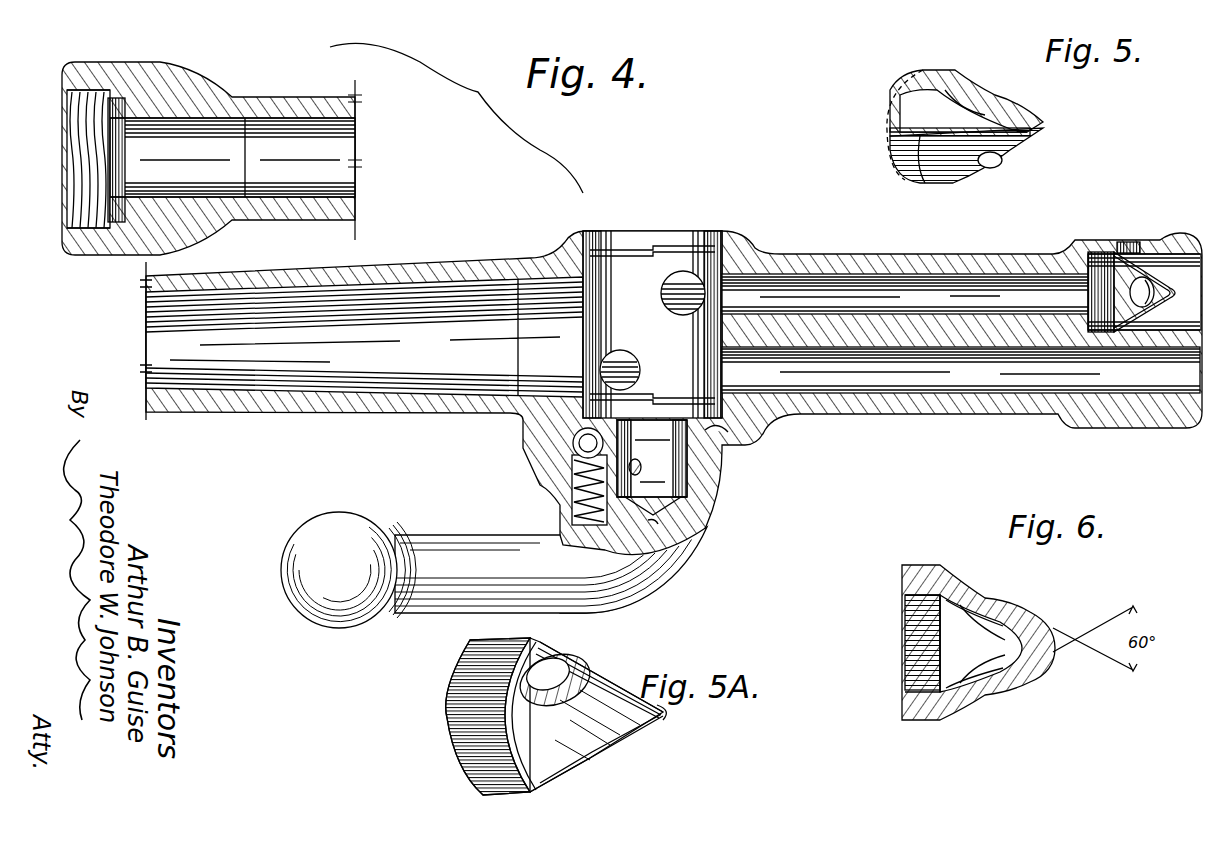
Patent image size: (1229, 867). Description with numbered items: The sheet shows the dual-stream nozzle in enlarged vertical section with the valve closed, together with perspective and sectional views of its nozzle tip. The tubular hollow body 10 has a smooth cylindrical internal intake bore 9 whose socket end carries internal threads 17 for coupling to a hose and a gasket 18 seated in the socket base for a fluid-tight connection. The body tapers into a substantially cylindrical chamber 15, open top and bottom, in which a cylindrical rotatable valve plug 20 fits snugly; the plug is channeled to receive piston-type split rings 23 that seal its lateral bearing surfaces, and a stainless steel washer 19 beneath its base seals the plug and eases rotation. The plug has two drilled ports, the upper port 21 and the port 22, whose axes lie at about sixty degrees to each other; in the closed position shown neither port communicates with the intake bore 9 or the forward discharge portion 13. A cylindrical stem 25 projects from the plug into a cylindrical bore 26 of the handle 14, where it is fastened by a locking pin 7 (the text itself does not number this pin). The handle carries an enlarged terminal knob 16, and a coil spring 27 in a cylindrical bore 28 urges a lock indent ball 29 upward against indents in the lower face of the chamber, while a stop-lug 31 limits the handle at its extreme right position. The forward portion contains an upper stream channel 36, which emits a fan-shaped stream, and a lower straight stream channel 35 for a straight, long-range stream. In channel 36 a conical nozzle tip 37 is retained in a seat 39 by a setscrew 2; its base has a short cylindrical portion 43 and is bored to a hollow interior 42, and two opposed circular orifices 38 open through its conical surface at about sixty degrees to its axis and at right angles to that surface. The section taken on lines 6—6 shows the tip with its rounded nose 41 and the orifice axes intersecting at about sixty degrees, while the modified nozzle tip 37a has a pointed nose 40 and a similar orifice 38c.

In FIG. 4, the setscrew 2 is at (1125, 252).
In FIG. 4, the section lines 6— 6 is at (1006, 286).
In FIG. 4, the pin hole 7 is at (640, 472).
In FIG. 4, the internal intake bore 9 is at (278, 135).
In FIG. 4, the tubular hollow body 10 is at (443, 262).
In FIG. 4, the forward discharge portion 13 is at (915, 260).
In FIG. 4, the handle 14 is at (460, 555).
In FIG. 4, the cylindrical chamber 15 is at (745, 240).
In FIG. 4, the terminal knob 16 is at (350, 525).
In FIG. 4, the threads 17 is at (95, 100).
In FIG. 4, the gasket 18 is at (125, 115).
In FIG. 4, the stainless steel washer 19 is at (705, 410).
In FIG. 4, the rotatable valve plug 20 is at (645, 302).
In FIG. 4, the upper port 21 is at (682, 292).
In FIG. 4, the port 22 is at (605, 370).
In FIG. 4, the piston-type split rings 23 is at (617, 255).
In FIG. 4, the cylindrical stem 25 is at (688, 470).
In FIG. 4, the cylindrical bore 26 is at (695, 512).
In FIG. 4, the coil spring 27 is at (572, 505).
In FIG. 4, the cylindrical bore 28 is at (575, 525).
In FIG. 4, the lock indent ball 29 is at (584, 438).
In FIG. 4, the stop-lug 31 is at (772, 460).
In FIG. 4, the lower stream channel 35 is at (943, 370).
In FIG. 4, the upper stream channel 36 is at (815, 290).
In FIG. 4, the nozzle tip 37 is at (1120, 322).
In FIG. 5, the nozzle tip 37 is at (940, 85).
In FIG. 5A, the valve cone 37a is at (505, 722).
In FIG. 4, the circular orifices 38 is at (1145, 290).
In FIG. 5, the circular orifices 38 is at (985, 103).
In FIG. 6, the circular orifices 38 is at (970, 600).
In FIG. 5A, the opening 38c is at (570, 660).
In FIG. 4, the seat 39 is at (1082, 262).
In FIG. 5A, the pointed nose 40 is at (667, 718).
In FIG. 6, the nozzle body 41 is at (1040, 650).
In FIG. 6, the hollow interior 42 is at (915, 645).
In FIG. 6, the short cylindrical portion 43 is at (932, 712).